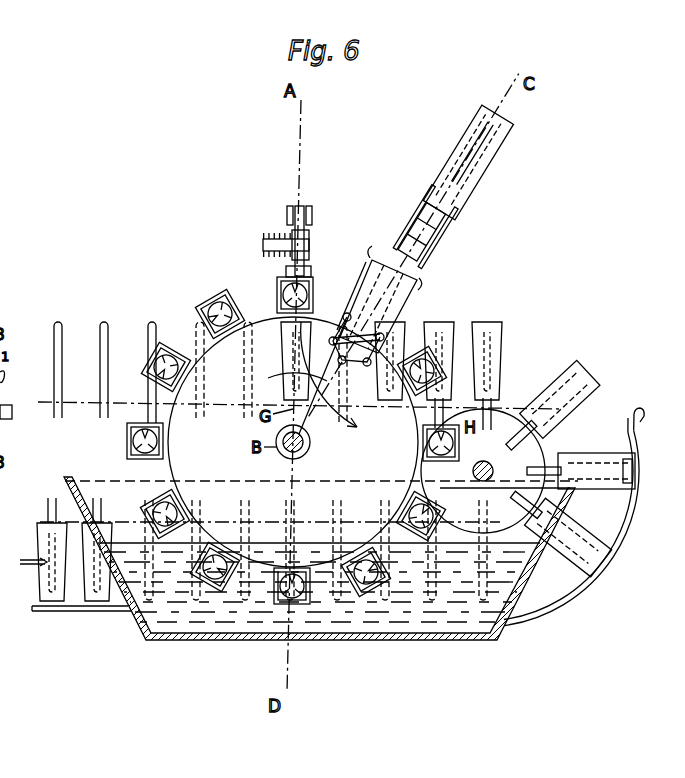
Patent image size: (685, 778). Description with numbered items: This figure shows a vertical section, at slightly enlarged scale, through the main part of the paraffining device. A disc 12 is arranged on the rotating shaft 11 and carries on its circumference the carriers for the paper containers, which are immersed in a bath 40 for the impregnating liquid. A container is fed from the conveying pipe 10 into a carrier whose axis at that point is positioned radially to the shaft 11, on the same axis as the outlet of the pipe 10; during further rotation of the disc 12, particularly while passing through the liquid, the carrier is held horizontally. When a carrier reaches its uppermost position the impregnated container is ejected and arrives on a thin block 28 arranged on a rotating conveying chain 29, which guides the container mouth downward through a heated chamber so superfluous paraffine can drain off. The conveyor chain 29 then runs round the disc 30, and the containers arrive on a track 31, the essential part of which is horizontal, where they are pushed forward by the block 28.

The conveying pipe 10 is at (475, 157).
The rotating shaft 11 is at (312, 444).
The disc 12 is at (172, 472).
The thin block 28 is at (104, 360).
The conveying chain 29 is at (88, 404).
The disc 30 is at (535, 443).
The track 31 is at (628, 522).
The bath 40 is at (455, 637).